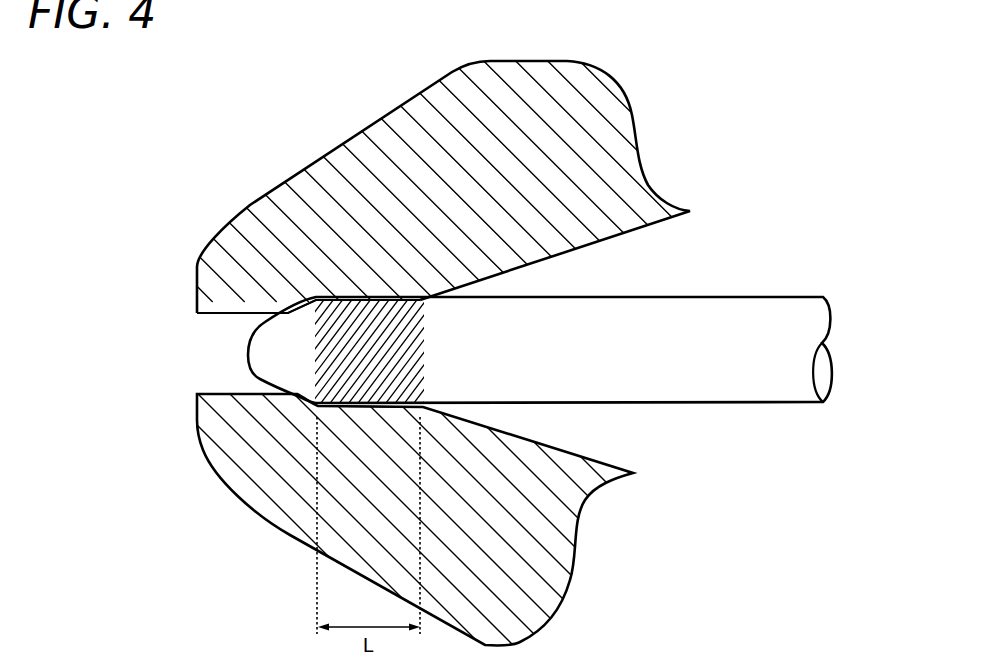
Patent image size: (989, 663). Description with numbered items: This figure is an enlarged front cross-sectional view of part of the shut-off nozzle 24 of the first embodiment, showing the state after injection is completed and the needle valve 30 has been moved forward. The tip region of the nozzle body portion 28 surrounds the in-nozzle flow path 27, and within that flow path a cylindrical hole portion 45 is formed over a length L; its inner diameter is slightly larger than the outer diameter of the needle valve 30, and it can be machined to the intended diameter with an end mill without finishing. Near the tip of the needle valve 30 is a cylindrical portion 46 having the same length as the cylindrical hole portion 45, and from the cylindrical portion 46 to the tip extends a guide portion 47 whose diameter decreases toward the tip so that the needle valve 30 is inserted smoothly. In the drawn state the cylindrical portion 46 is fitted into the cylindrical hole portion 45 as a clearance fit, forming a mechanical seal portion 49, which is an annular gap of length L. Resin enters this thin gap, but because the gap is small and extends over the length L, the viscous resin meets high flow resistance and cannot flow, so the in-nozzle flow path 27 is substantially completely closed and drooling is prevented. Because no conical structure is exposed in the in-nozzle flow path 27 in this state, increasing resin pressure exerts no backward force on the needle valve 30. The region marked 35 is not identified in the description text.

The shut-off nozzle 24 is at (458, 336).
The in-nozzle flow path 27 is at (598, 430).
The nozzle body portion 28 is at (217, 153).
The needle valve 30 is at (807, 297).
The gap 35 is at (178, 344).
The cylindrical hole portion 45 is at (334, 405).
The cylindrical portion 46 is at (360, 296).
The guide portion 47 is at (262, 332).
The mechanical seal portion 49 is at (375, 362).